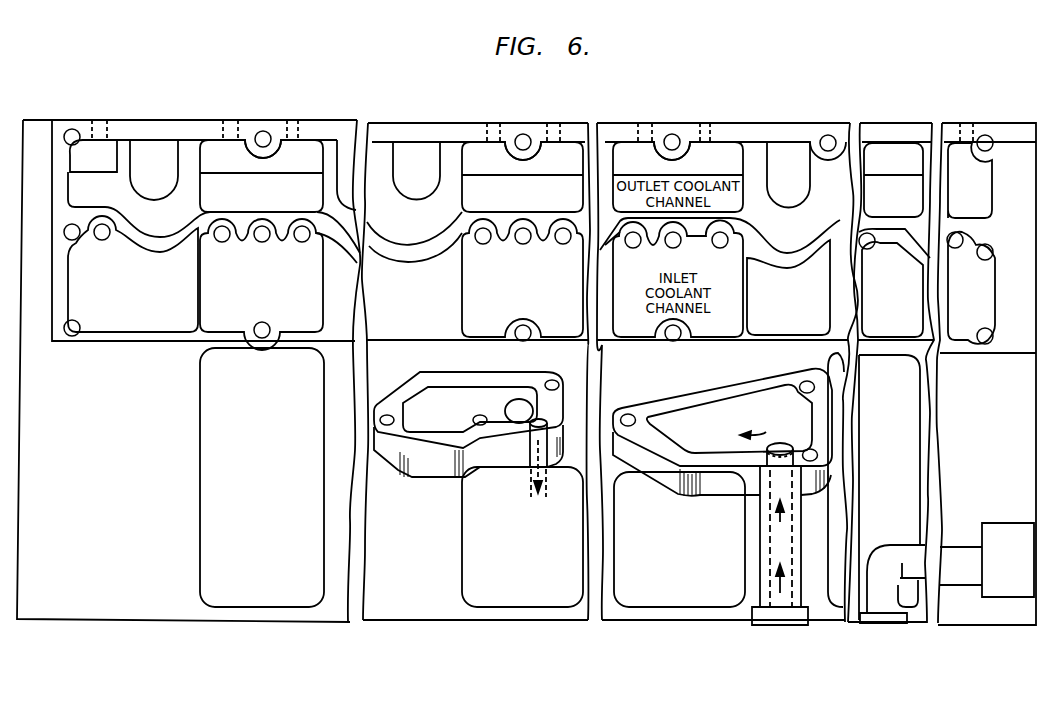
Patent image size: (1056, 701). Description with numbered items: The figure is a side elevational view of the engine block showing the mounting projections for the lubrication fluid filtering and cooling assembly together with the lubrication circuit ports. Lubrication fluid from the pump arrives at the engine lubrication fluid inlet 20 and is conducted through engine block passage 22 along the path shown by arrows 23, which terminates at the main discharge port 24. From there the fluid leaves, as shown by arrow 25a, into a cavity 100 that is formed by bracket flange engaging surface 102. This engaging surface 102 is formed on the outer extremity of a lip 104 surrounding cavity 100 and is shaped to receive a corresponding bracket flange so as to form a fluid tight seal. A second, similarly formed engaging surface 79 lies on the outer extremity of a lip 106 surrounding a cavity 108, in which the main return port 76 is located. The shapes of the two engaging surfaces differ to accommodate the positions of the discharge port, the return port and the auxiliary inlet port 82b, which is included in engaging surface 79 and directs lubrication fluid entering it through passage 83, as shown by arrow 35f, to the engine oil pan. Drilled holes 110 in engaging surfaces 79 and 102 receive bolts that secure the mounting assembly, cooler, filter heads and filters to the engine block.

The engine lubrication fluid inlet 20 is at (777, 626).
The engine block passage 22 is at (787, 548).
The arrows 23 is at (780, 585).
The main discharge port 24 is at (788, 445).
The arrow 25a is at (766, 432).
The arrow 35f is at (535, 470).
The main return port 76 is at (510, 405).
The engaging surface 79 is at (436, 478).
The auxiliary inlet port 82b is at (543, 428).
The passage 83 is at (528, 455).
The cavity 100 is at (707, 409).
The bracket flange engaging surface 102 is at (683, 487).
The lip 104 is at (678, 456).
The lip 106 is at (398, 399).
The cavity 108 is at (472, 381).
The drilled holes 110 is at (553, 384).